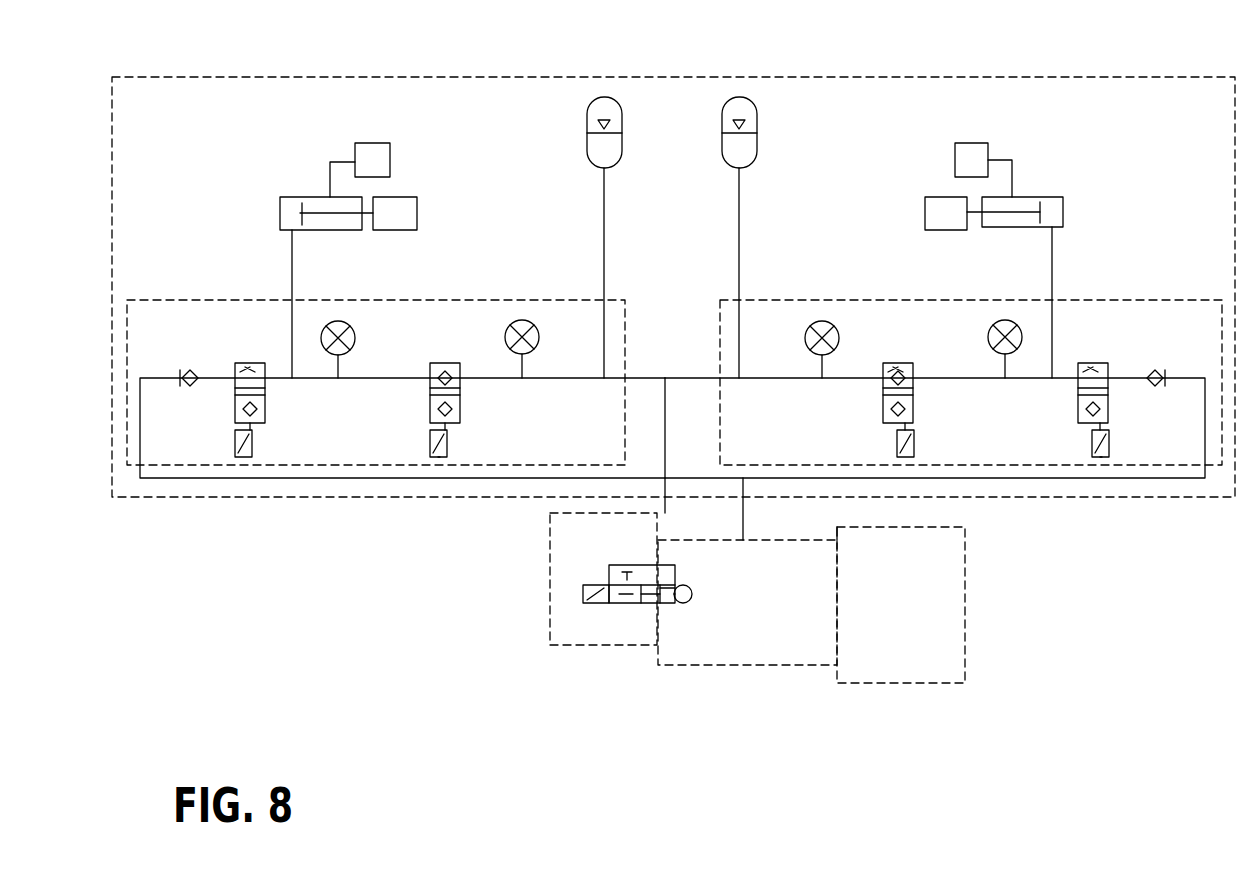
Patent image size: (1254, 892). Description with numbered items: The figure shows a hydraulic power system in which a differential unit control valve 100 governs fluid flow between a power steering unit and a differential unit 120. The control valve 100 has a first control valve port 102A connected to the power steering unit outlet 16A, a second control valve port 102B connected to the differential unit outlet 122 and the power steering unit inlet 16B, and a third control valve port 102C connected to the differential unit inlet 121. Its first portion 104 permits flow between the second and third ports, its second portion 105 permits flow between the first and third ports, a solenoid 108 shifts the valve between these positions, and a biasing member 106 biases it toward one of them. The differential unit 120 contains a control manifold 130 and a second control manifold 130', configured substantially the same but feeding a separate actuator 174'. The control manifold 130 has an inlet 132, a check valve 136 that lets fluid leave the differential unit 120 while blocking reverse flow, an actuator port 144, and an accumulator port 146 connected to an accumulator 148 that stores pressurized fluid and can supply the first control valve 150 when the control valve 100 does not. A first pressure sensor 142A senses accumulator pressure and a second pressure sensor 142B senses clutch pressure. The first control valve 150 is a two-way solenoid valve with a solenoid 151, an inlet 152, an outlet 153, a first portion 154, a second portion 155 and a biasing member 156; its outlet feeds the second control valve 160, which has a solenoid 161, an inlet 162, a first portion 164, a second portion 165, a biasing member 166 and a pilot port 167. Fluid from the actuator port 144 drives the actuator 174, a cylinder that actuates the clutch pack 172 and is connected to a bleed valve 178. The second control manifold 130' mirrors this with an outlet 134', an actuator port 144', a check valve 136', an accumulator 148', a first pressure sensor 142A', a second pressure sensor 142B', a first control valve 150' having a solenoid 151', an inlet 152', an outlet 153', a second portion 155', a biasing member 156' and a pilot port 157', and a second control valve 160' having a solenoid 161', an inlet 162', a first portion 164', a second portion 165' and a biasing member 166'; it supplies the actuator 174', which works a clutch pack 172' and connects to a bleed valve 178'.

The differential unit 120 is at (1032, 68).
The second control manifold 130' is at (376, 346).
The control manifold 130 is at (971, 345).
The outlet 134' is at (402, 428).
The inlet 132 is at (742, 388).
The differential unit inlet 121 is at (670, 504).
The differential unit outlet 122 is at (748, 504).
The accumulator 148' is at (638, 230).
The accumulator 148 is at (773, 128).
The accumulator port 146 is at (745, 298).
The actuator 174' is at (314, 171).
The first position sensor 178' is at (400, 151).
The first actuator 172' is at (439, 202).
The actuator port 144' is at (332, 304).
The actuator 174 is at (1032, 169).
The bleed valve 178 is at (952, 165).
The clutch pack 172 is at (916, 206).
The actuator port 144 is at (1093, 298).
The second pressure sensor 142B' is at (384, 312).
The first pressure sensor 142A' is at (550, 306).
The first pressure sensor 142A is at (835, 316).
The second pressure sensor 142B is at (993, 312).
The check valve 136' is at (173, 349).
The check valve 136 is at (1178, 356).
The first solenoid valve 166' is at (236, 346).
The valve element 164' is at (370, 340).
The valve port 162' is at (291, 401).
The check valve element 165' is at (295, 418).
The second control valve 160' is at (291, 443).
The valve connection 161' is at (198, 483).
The second solenoid valve 156' is at (422, 366).
The valve element 153' is at (405, 395).
The valve port 152' is at (488, 399).
The check valve element 155' is at (492, 419).
The first control valve 150' is at (488, 443).
The valve connection 151' is at (403, 439).
The solenoid lead 157' is at (467, 501).
The biasing member 156 is at (888, 366).
The first portion 154 is at (914, 364).
The inlet 152 is at (865, 404).
The outlet 153 is at (941, 390).
The second portion 155 is at (941, 417).
The first control valve 150 is at (948, 443).
The solenoid 151 is at (860, 437).
The biasing member 166 is at (1103, 347).
The first portion 164 is at (1125, 340).
The inlet 162 is at (1060, 405).
The second portion 165 is at (1138, 422).
The second control valve 160 is at (1141, 447).
The solenoid 161 is at (1100, 422).
The pilot port 167 is at (1106, 460).
The differential unit control valve 100 is at (571, 627).
The solenoid 108 is at (592, 582).
The second portion 105 is at (620, 563).
The third control valve port 102C is at (651, 608).
The first portion 104 is at (682, 574).
The biasing member 106 is at (688, 606).
The second control valve port 102B is at (668, 558).
The first control valve port 102A is at (679, 610).
The power steering unit inlet 16B is at (830, 549).
The power steering unit outlet 16A is at (828, 682).